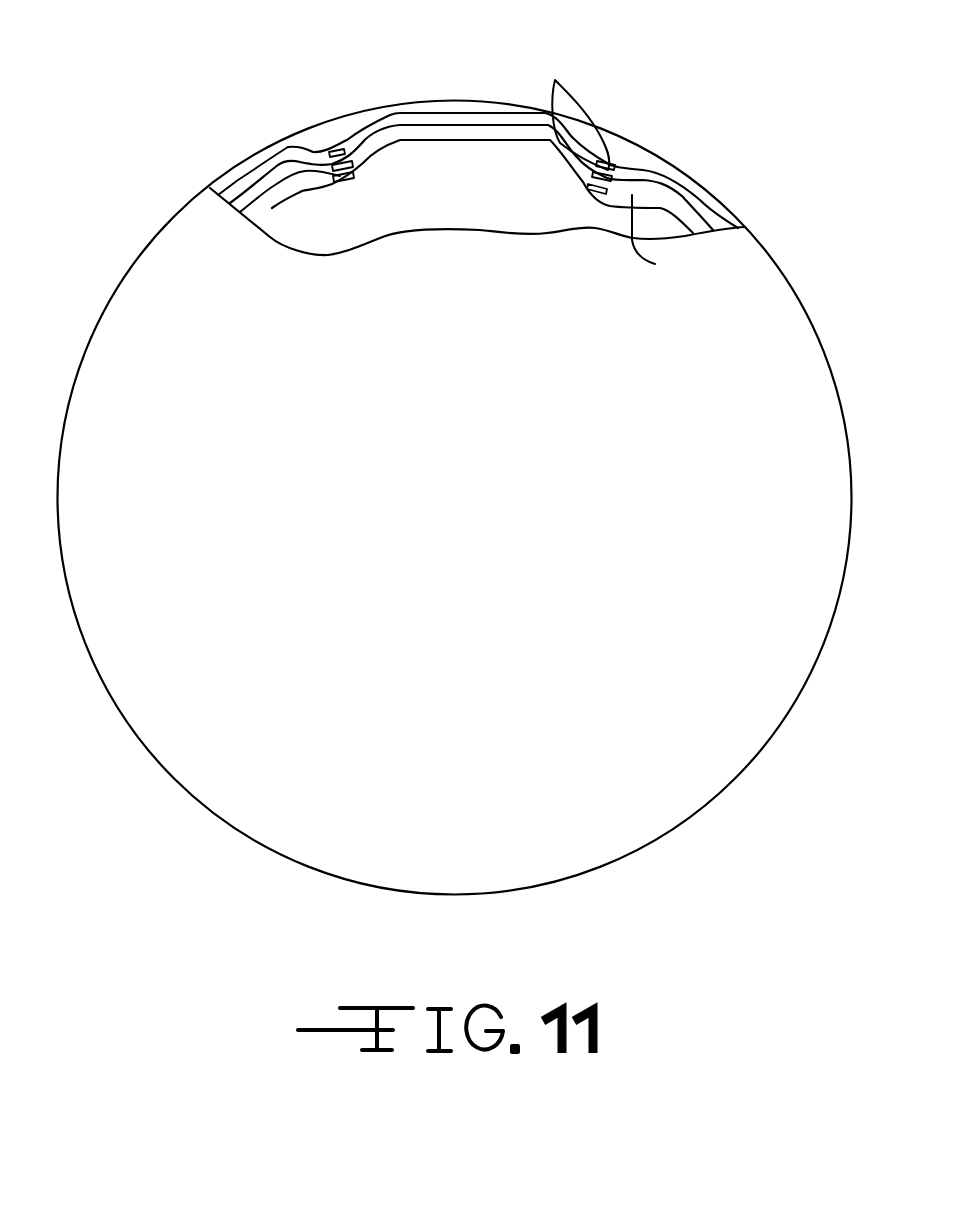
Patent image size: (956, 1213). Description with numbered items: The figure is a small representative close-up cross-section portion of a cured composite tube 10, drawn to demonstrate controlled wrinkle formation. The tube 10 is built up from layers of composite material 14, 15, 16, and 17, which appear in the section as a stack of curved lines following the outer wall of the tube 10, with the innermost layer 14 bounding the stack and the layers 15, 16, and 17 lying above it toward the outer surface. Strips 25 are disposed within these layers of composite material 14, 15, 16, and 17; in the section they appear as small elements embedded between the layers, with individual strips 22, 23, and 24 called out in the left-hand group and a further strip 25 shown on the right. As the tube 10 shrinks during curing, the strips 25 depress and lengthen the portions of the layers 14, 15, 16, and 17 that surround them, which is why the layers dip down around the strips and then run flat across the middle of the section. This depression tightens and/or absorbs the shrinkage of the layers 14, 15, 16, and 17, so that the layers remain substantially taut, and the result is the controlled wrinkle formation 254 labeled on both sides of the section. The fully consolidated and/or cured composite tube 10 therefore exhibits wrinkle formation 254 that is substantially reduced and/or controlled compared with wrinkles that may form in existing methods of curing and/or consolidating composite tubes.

The cured composite tube 10 is at (788, 281).
The layer of composite material 14 is at (272, 208).
The layer of composite material 15 is at (231, 211).
The layer of composite material 16 is at (288, 148).
The layer of composite material 17 is at (313, 148).
The controlled wrinkle formation 254 is at (330, 150).
The first electrode element 22 is at (350, 174).
The second electrode element 23 is at (343, 164).
The third electrode element 24 is at (343, 150).
The strips 25 is at (555, 82).